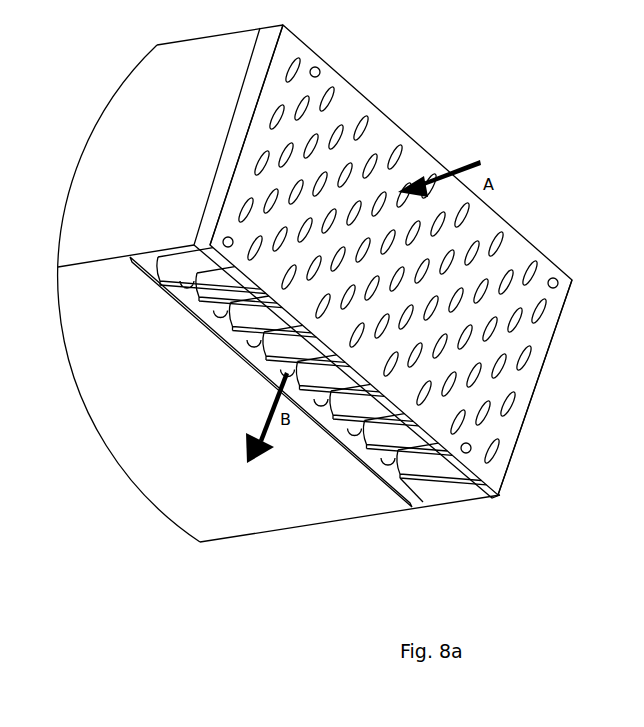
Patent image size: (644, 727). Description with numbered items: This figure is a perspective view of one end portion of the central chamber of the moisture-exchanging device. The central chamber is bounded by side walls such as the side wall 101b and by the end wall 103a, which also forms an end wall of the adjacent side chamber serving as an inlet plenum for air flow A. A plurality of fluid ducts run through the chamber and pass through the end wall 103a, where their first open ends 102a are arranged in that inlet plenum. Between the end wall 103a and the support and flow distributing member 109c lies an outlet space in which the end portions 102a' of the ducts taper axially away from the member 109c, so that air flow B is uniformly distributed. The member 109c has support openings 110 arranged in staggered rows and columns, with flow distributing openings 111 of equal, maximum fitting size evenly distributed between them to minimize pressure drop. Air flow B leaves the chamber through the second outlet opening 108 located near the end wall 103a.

The side wall 101b is at (178, 165).
The first open ends 102a is at (419, 260).
The end portions 102a' is at (381, 512).
The end wall 103a is at (542, 372).
The second outlet opening 108 is at (453, 498).
The support and flow distributing member 109c is at (195, 316).
The support openings 110 is at (247, 360).
The flow distributing openings 111 is at (402, 469).